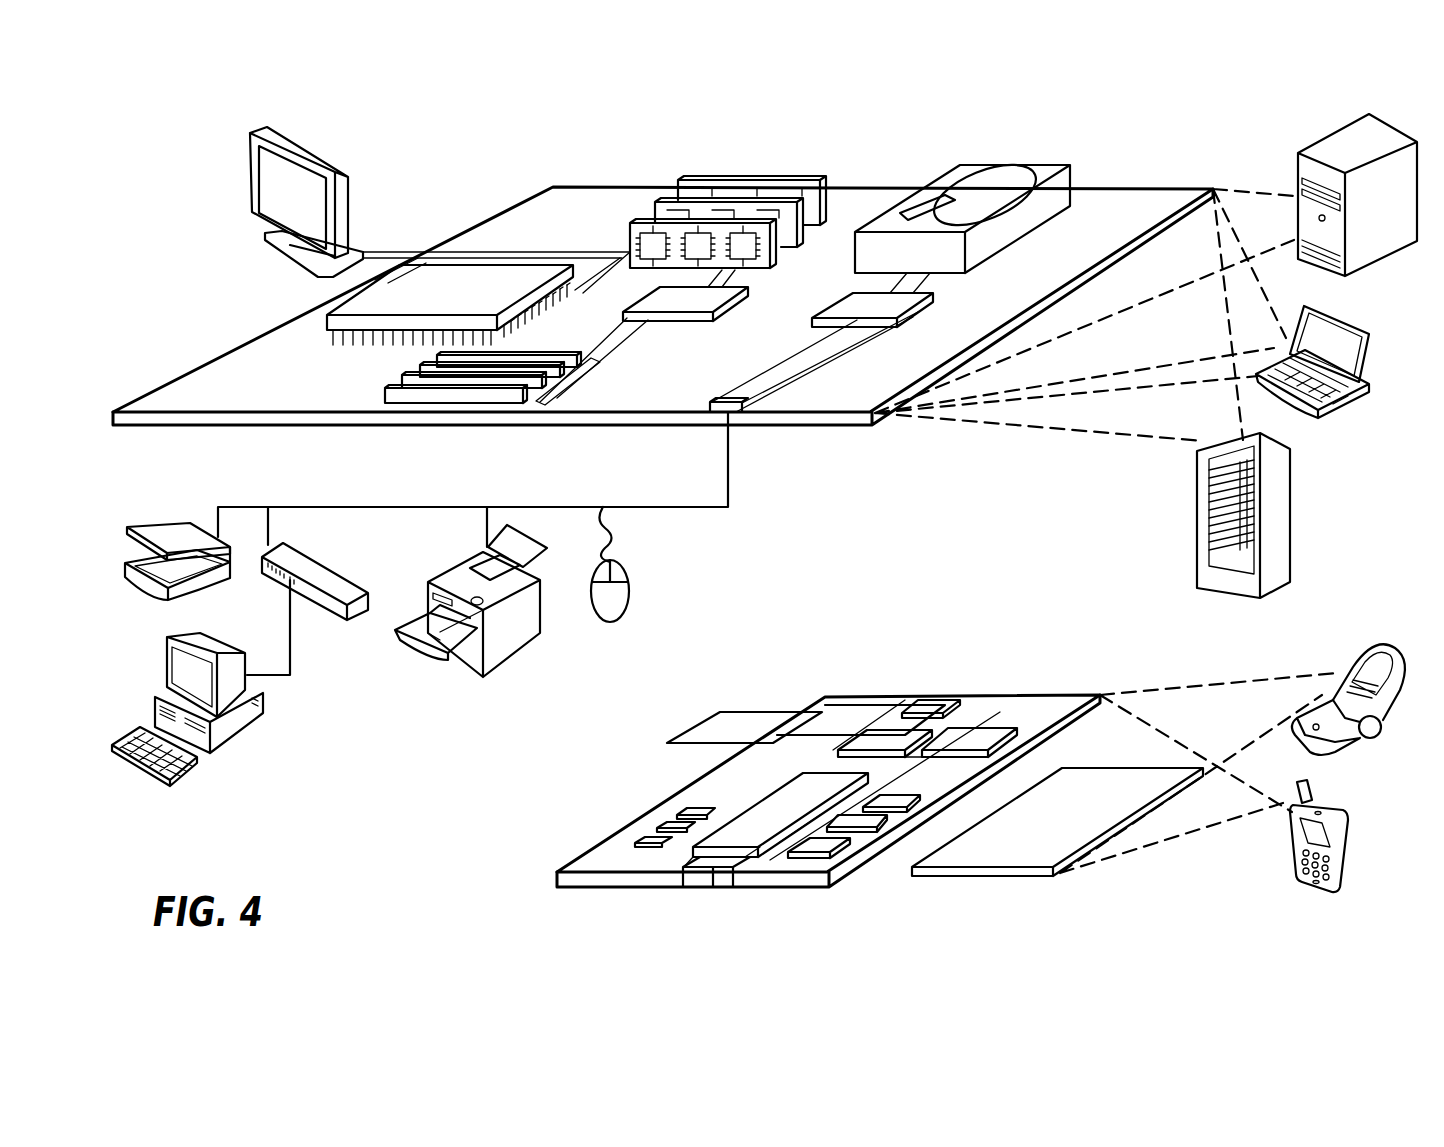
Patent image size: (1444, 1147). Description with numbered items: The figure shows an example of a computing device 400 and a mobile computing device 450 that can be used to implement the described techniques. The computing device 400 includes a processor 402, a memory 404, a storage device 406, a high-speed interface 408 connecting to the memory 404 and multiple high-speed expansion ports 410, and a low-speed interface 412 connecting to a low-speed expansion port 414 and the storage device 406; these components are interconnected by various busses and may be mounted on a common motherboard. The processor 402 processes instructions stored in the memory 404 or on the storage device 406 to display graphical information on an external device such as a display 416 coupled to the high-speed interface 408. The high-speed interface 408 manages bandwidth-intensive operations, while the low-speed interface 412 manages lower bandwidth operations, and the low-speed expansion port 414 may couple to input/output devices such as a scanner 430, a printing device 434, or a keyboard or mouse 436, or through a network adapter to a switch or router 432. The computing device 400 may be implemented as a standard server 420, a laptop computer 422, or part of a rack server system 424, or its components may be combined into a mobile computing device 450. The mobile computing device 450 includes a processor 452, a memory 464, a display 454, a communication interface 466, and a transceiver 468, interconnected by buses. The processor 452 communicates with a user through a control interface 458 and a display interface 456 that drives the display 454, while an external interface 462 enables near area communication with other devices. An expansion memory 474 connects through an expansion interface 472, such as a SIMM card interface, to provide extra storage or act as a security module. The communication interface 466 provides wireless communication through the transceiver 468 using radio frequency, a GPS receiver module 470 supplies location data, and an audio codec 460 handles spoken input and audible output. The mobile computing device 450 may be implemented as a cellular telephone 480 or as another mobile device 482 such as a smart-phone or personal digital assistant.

The computing device 400 is at (470, 154).
The processor 402 is at (327, 320).
The memory 404 is at (690, 180).
The storage device 406 is at (955, 165).
The high-speed interface 408 is at (660, 297).
The high-speed expansion ports 410 is at (415, 385).
The low-speed interface 412 is at (855, 300).
The low-speed expansion port 414 is at (742, 413).
The display 416 is at (253, 135).
The standard server 420 is at (1298, 172).
The laptop computer 422 is at (1372, 333).
The rack server system 424 is at (1197, 548).
The scanner 430 is at (160, 527).
The switch or router 432 is at (330, 616).
The printing device 434 is at (513, 660).
The mouse 436 is at (637, 600).
The mobile computing device 450 is at (526, 885).
The processor 452 is at (748, 838).
The display 454 is at (1012, 857).
The display interface 456 is at (827, 850).
The control interface 458 is at (863, 822).
The audio codec 460 is at (893, 800).
The external interface 462 is at (713, 873).
The memory 464 is at (655, 825).
The communication interface 466 is at (885, 740).
The transceiver 468 is at (965, 735).
The GPS receiver module 470 is at (938, 705).
The expansion interface 472 is at (798, 712).
The expansion memory 474 is at (720, 712).
The cellular telephone 480 is at (1360, 660).
The mobile phone 482 is at (1285, 845).